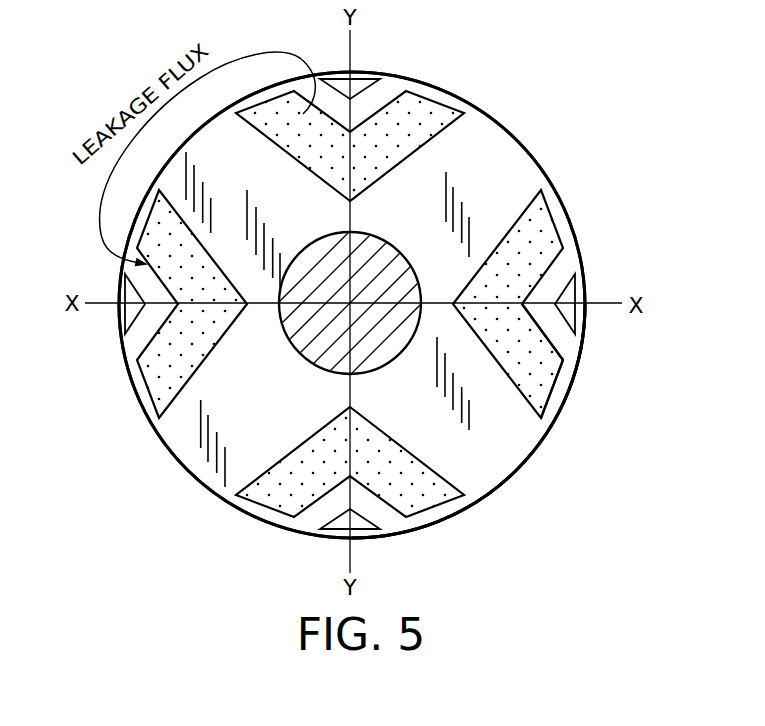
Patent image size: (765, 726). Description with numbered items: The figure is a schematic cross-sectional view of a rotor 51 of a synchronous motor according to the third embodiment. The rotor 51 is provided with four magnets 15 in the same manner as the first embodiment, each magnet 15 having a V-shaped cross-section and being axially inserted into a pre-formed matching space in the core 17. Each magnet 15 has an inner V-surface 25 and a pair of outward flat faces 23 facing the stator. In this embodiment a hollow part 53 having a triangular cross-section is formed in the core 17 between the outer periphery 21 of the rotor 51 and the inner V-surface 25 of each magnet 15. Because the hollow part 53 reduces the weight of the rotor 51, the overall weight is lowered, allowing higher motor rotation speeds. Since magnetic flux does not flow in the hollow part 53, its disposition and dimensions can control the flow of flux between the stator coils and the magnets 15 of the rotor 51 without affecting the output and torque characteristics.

The rotor 51 is at (562, 140).
The core 17 is at (493, 148).
The magnet 15 is at (540, 223).
The hollow part 53 is at (572, 297).
The inner V-surface 25 is at (557, 352).
The outward flat face 23 is at (555, 388).
The outer peripheral surface of rotor core 21 is at (510, 480).